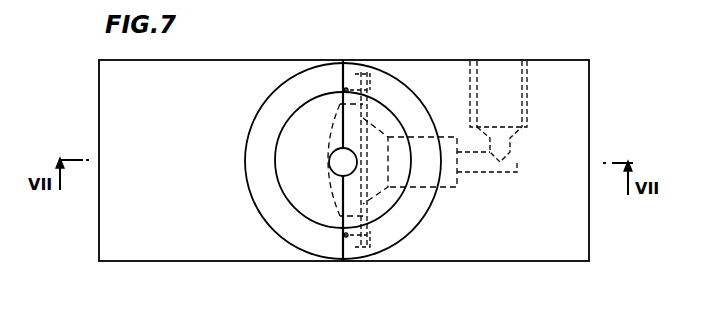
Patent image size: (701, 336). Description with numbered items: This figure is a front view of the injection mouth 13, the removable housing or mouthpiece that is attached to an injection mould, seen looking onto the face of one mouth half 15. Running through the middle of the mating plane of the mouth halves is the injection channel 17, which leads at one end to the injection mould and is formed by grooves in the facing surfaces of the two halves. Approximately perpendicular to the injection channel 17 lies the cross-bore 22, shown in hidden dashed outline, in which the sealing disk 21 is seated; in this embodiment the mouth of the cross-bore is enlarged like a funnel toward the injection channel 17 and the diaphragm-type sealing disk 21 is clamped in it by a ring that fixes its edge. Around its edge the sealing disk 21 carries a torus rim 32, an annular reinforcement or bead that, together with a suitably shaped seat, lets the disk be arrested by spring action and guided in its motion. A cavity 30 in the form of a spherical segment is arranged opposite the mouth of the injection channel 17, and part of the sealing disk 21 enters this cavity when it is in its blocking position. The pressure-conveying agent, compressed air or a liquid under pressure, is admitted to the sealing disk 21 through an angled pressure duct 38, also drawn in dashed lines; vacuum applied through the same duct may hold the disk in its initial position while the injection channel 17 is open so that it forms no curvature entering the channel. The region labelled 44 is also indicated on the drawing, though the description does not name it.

The injection mouth 13 is at (603, 84).
The mouth half 15 is at (205, 76).
The injection channel 17 is at (345, 158).
The sealing disk 21 is at (365, 177).
The cross-bore 22 is at (432, 170).
The cavity 30 is at (323, 190).
The torus rim 32 is at (372, 80).
The angled pressure duct 38 is at (503, 163).
The end portion of block 44 is at (551, 81).